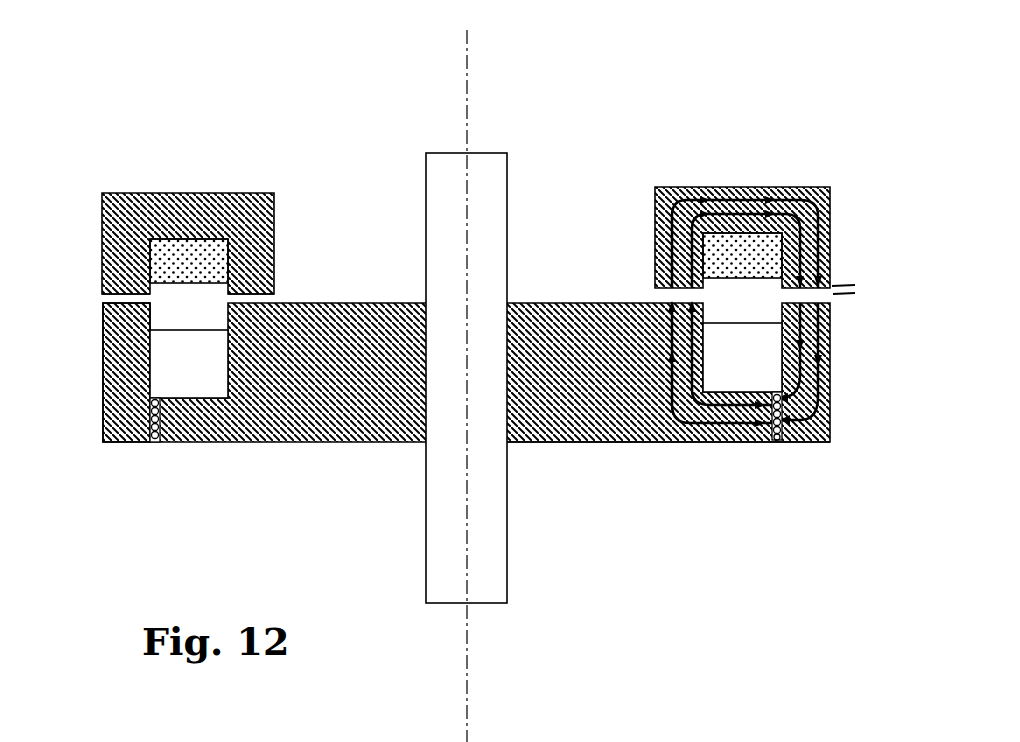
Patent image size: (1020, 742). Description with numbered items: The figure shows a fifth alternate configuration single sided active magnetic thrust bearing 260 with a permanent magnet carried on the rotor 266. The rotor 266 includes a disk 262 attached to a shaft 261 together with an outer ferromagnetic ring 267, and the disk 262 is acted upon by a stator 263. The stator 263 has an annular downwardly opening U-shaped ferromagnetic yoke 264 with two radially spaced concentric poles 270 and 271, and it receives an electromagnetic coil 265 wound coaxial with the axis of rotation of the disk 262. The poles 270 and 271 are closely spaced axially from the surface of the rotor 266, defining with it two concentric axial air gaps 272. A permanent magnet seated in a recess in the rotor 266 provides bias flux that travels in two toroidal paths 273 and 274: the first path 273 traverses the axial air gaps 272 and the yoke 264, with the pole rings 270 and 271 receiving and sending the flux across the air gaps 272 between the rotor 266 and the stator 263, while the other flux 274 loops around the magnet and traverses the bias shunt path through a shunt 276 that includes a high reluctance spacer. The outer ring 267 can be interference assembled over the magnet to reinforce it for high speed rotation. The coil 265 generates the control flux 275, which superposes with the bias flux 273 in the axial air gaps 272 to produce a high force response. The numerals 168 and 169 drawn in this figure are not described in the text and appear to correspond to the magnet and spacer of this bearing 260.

The single sided active magnetic thrust bearing 260 is at (202, 80).
The shaft 261 is at (488, 153).
The disk 262 is at (576, 303).
The stator 263 is at (838, 180).
The ferromagnetic yoke 264 is at (228, 193).
The electromagnetic coil 265 is at (180, 239).
The rotor 266 is at (591, 465).
The outer ferromagnetic ring 267 is at (103, 330).
The lower magnet 168 is at (150, 347).
The non-magnetic spacer 169 is at (142, 411).
The pole 270 is at (122, 295).
The pole 271 is at (252, 295).
The axial air gaps 272 is at (866, 290).
The bias flux first path 273 is at (805, 326).
The bias flux second path 274 is at (805, 386).
The control flux 275 is at (815, 246).
The shunt 276 is at (754, 442).